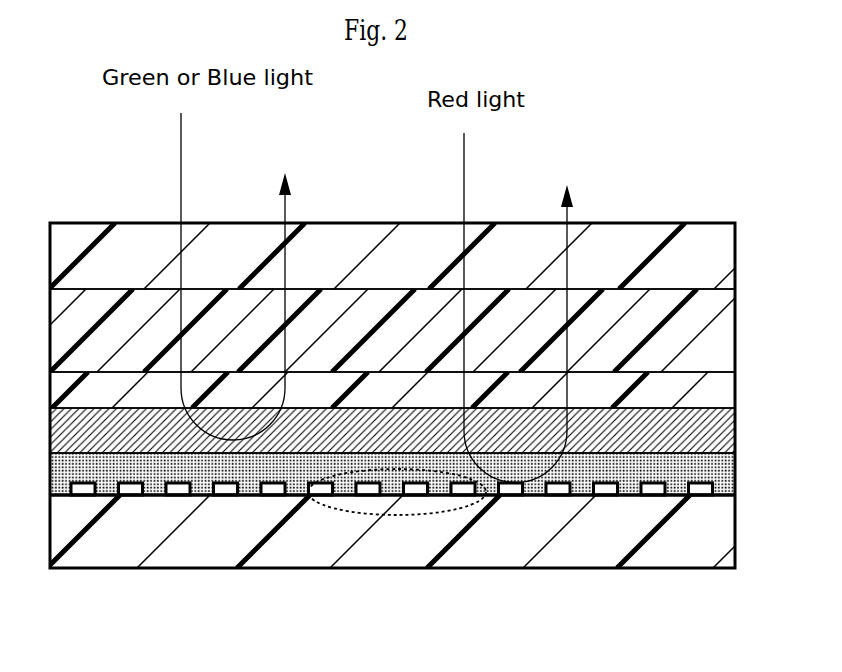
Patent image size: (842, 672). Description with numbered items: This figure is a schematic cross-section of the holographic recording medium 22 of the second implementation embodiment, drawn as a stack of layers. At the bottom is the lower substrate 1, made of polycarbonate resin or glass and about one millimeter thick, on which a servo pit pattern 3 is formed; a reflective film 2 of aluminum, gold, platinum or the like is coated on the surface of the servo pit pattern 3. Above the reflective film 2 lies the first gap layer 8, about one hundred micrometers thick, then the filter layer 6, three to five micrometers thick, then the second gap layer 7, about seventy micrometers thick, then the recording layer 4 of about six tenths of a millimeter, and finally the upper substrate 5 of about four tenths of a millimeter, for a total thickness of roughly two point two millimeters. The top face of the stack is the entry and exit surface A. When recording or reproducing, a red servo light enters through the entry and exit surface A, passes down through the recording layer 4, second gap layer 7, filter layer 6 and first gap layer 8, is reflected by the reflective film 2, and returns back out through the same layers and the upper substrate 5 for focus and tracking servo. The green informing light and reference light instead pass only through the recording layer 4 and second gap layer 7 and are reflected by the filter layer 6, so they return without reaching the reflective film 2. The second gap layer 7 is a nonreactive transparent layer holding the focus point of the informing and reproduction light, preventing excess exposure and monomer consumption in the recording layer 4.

The substrate 1 is at (735, 539).
The reflective film 2 is at (55, 488).
The servo pit pattern 3 is at (402, 514).
The recording layer 4 is at (735, 331).
The upper substrate 5 is at (735, 254).
The filter layer 6 is at (735, 429).
The second gap layer 7 is at (735, 381).
The first gap layer 8 is at (730, 480).
The holographic recording medium 22 is at (679, 210).
The entry and exit surface A is at (116, 223).